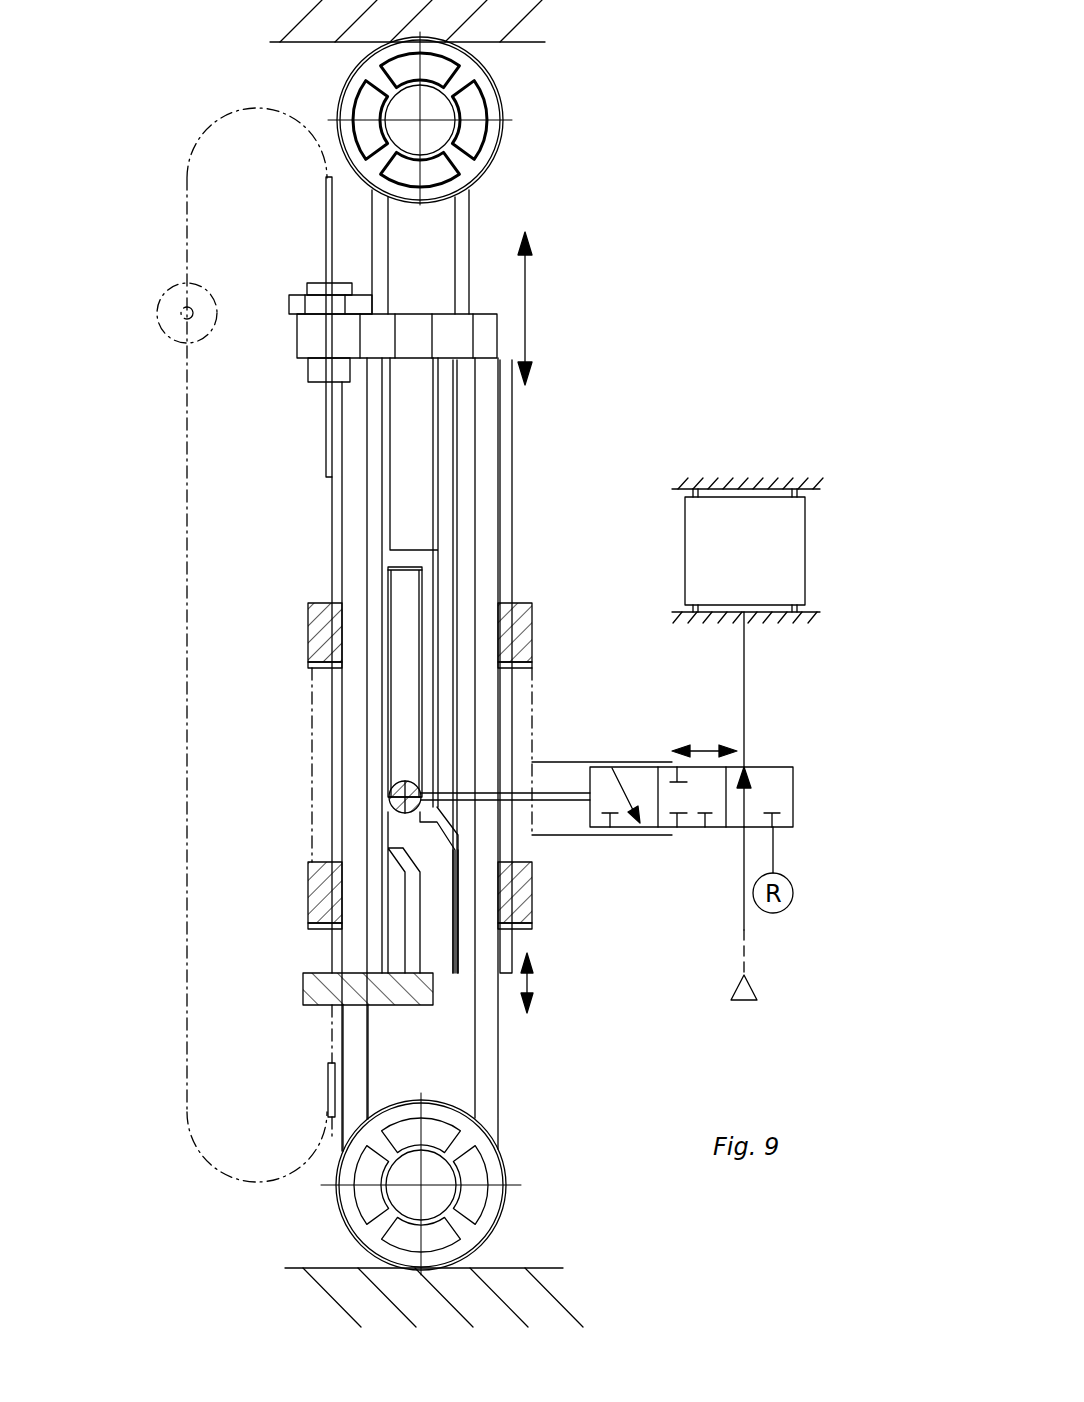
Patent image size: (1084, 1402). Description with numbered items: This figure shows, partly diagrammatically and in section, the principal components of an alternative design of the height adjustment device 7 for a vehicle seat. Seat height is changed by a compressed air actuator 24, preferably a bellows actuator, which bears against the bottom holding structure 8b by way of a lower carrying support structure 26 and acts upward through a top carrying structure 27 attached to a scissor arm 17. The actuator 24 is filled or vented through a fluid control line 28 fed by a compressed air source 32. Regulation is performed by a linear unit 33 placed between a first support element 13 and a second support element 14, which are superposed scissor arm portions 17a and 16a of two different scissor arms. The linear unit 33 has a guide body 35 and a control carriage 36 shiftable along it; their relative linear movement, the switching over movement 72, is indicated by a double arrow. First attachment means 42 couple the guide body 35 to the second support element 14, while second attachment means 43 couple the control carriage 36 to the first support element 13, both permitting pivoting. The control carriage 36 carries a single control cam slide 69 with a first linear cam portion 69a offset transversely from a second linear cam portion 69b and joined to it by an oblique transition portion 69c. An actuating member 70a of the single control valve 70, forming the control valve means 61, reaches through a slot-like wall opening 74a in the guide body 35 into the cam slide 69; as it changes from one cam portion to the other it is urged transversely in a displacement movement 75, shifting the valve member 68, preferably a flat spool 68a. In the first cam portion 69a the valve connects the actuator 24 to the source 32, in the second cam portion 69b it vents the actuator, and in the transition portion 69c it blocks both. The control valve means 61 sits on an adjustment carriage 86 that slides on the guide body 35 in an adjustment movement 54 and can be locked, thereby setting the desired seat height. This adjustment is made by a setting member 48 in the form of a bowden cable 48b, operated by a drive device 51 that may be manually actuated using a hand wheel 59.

The height adjustment device 7 is at (656, 343).
The first support element 13 is at (480, 24).
The scissor arm portion 17a is at (540, 22).
The second attachment means 43 is at (437, 97).
The first attachment means 42 is at (440, 1165).
The second support element 14 is at (492, 1297).
The scissor arm portion 16a is at (548, 1283).
The drive device 51 is at (160, 264).
The hand wheel 59 is at (158, 278).
The setting member 48 is at (257, 645).
The bowden cable 48b is at (187, 497).
The switching over movement 72 is at (527, 308).
The slot-like wall opening 74a is at (455, 388).
The guide body 35 is at (487, 457).
The control carriage 36 is at (408, 537).
The linear unit 33 is at (566, 532).
The top carrying structure 27 is at (747, 444).
The scissor arm 17 is at (735, 489).
The compressed air actuator 24 is at (792, 548).
The lower carrying support structure 26 is at (746, 649).
The bottom holding structure 8b is at (717, 615).
The adjustment carriage 86 is at (510, 636).
The control cam slide 69 is at (458, 770).
The first linear cam portion 69a is at (390, 698).
The second linear cam portion 69b is at (445, 932).
The transition portion 69c is at (397, 845).
The actuating member 70a is at (392, 788).
The displacement movement 75 is at (700, 750).
The fluid control line 28 is at (744, 705).
The control valve means 61 is at (758, 804).
The control valve 70 is at (758, 804).
The valve member 68 is at (694, 838).
The flat spool 68a is at (690, 823).
The compressed air source 32 is at (757, 990).
The adjustment movement 54 is at (530, 985).